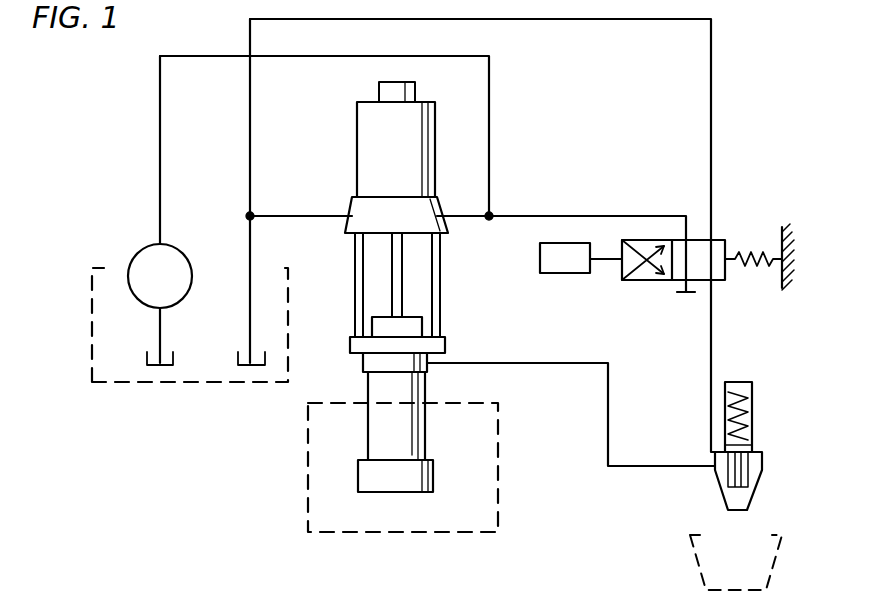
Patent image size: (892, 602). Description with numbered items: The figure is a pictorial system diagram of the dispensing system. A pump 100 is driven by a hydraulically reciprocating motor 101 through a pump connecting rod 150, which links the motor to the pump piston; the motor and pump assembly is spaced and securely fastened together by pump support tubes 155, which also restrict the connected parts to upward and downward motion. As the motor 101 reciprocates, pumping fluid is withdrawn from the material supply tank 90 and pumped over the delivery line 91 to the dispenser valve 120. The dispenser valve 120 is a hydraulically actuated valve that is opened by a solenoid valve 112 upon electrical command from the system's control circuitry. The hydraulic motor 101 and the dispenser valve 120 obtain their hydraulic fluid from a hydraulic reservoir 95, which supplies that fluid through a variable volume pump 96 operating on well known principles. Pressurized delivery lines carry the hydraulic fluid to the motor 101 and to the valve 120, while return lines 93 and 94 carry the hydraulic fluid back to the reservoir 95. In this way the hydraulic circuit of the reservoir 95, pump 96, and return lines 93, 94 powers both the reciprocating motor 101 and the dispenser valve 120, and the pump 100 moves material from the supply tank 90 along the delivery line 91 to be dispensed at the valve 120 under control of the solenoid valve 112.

The material supply tank 90 is at (498, 484).
The delivery line 91 is at (609, 382).
The return line 93 is at (712, 86).
The return line 94 is at (280, 216).
The hydraulic reservoir 95 is at (92, 382).
The variable volume pump 96 is at (183, 255).
The pump 100 is at (428, 385).
The hydraulically reciprocating motor 101 is at (357, 156).
The solenoid valve 112 is at (620, 282).
The dispenser valve 120 is at (718, 490).
The pump connecting rod 150 is at (403, 268).
The pump support tubes 155 is at (354, 290).